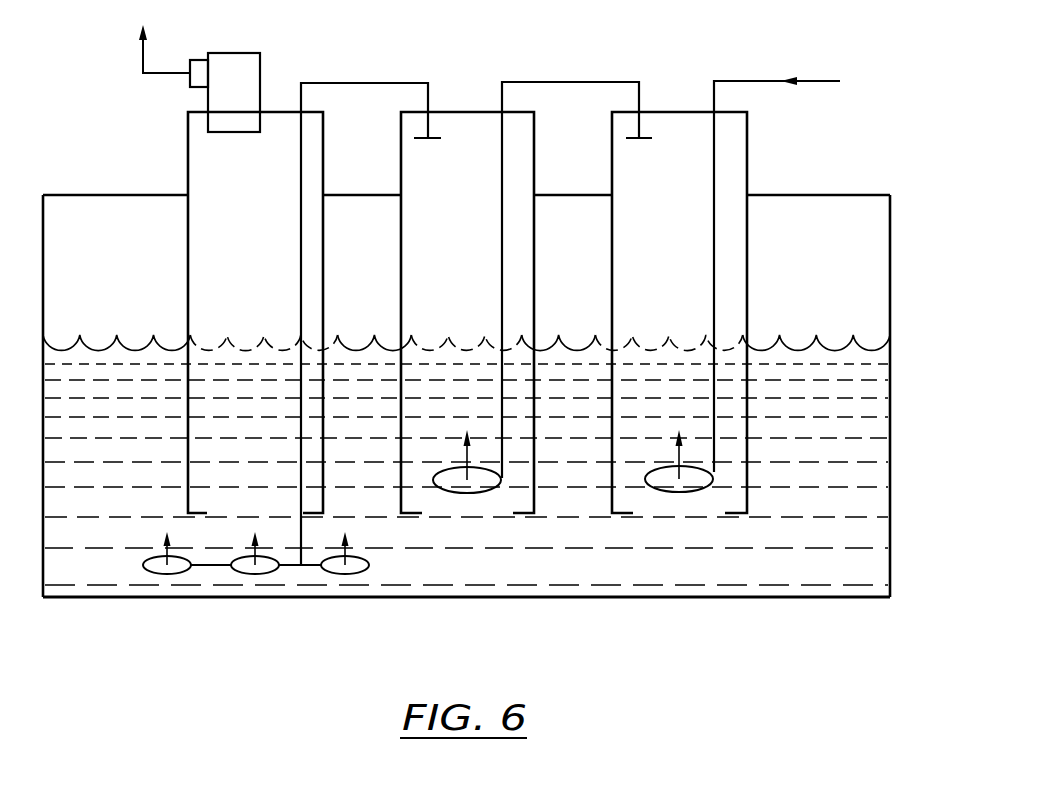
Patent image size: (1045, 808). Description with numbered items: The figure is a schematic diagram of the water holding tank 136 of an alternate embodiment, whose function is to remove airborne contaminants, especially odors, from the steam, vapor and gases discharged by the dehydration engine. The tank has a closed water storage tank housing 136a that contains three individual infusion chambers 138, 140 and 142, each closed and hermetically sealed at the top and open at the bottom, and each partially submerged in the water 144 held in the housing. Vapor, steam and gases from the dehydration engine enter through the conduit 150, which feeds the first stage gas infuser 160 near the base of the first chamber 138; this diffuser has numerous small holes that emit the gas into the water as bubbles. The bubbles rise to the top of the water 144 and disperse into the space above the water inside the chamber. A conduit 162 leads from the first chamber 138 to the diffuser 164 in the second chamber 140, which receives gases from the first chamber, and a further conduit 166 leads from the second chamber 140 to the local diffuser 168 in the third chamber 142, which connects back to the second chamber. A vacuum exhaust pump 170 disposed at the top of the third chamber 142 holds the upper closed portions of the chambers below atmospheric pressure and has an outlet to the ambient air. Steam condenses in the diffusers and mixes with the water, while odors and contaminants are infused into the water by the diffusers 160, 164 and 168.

The water holding tank 136 is at (823, 190).
The closed water storage tank housing 136a is at (858, 597).
The first infusion chamber 138 is at (747, 472).
The second infusion chamber 140 is at (537, 502).
The third infusion chamber 142 is at (188, 482).
The water 144 is at (660, 563).
The conduit 150 is at (745, 81).
The first stage gas infuser 160 is at (685, 495).
The conduit 162 is at (565, 81).
The diffuser 164 is at (482, 493).
The conduit 166 is at (365, 82).
The local diffuser 168 is at (363, 574).
The vacuum exhaust pump 170 is at (235, 52).